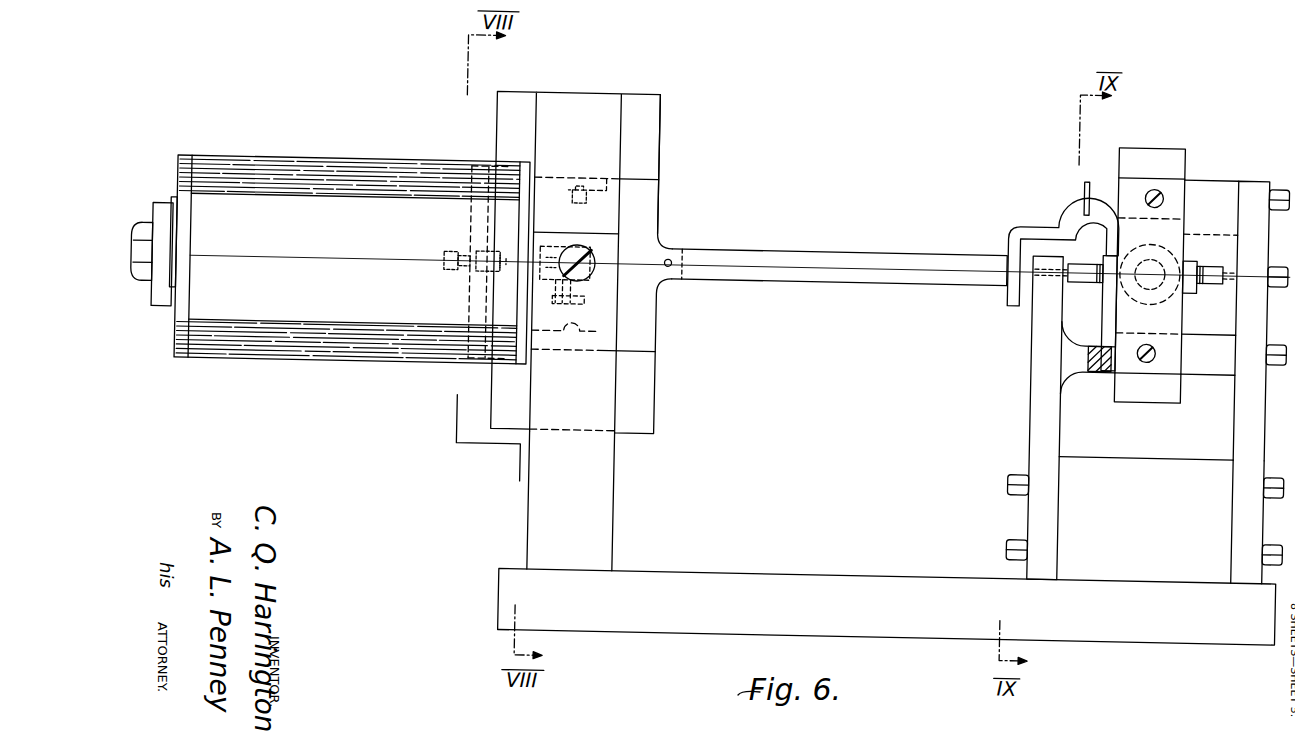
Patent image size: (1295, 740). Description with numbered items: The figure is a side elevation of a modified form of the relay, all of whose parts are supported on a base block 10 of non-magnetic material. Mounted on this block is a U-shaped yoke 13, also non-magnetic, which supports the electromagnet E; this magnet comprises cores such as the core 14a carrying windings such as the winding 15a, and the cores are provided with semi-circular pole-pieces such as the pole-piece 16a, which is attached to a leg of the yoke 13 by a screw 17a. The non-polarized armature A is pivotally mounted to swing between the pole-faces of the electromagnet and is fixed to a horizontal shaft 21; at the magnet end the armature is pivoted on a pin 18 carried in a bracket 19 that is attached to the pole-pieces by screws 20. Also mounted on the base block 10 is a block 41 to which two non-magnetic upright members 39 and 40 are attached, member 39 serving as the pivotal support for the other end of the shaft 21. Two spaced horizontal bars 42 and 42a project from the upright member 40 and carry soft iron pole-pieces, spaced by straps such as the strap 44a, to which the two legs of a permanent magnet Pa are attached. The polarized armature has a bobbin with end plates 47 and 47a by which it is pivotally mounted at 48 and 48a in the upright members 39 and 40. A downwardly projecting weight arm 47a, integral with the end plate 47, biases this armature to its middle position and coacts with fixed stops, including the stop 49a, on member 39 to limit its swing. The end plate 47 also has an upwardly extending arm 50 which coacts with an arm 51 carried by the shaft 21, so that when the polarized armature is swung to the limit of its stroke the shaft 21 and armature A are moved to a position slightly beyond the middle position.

The electromagnet E is at (352, 239).
The winding 15a is at (352, 259).
The core 14a is at (128, 261).
The pin 18 is at (500, 274).
The bracket 19 is at (472, 208).
The non-polarized armature A is at (496, 128).
The pole-piece 16a is at (658, 110).
The screw 17a is at (588, 267).
The screws 20 is at (587, 195).
The horizontal shaft 21 is at (836, 246).
The U-shaped yoke 13 is at (530, 491).
The base block 10 is at (1165, 630).
The upwardly extending arm 50 is at (1099, 185).
The arm 51 is at (1082, 180).
The upright member 39 is at (1031, 423).
The pivot 48 is at (1052, 262).
The end plate 47 is at (1105, 275).
The fixed stop 49a is at (1068, 326).
The permanent magnet Pa is at (1183, 138).
The end plate / downwardly projecting arm 47a is at (1188, 283).
The pivot 48a is at (1225, 257).
The strap 44a is at (1187, 220).
The horizontal bar 42a is at (1217, 362).
The horizontal bar 42 is at (1218, 166).
The upright member 40 is at (1231, 457).
The block 41 is at (1133, 449).